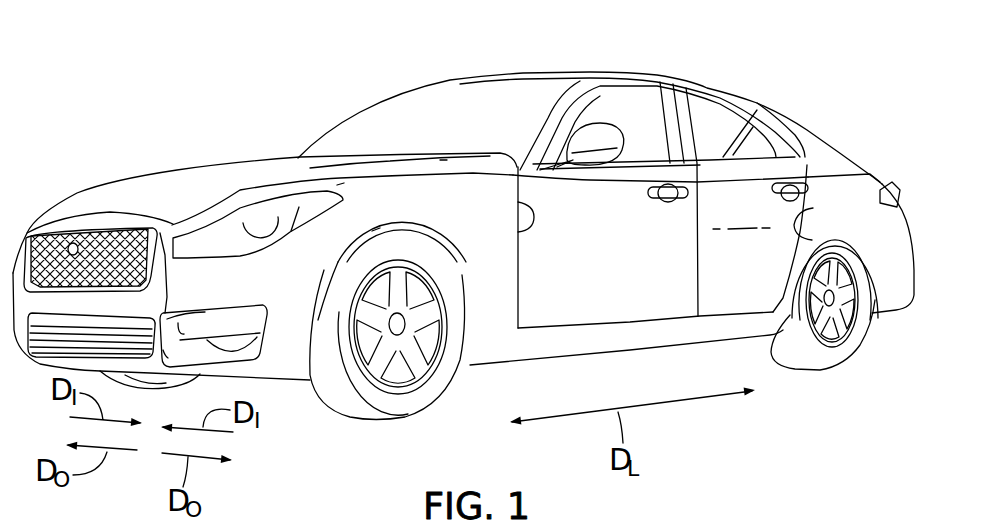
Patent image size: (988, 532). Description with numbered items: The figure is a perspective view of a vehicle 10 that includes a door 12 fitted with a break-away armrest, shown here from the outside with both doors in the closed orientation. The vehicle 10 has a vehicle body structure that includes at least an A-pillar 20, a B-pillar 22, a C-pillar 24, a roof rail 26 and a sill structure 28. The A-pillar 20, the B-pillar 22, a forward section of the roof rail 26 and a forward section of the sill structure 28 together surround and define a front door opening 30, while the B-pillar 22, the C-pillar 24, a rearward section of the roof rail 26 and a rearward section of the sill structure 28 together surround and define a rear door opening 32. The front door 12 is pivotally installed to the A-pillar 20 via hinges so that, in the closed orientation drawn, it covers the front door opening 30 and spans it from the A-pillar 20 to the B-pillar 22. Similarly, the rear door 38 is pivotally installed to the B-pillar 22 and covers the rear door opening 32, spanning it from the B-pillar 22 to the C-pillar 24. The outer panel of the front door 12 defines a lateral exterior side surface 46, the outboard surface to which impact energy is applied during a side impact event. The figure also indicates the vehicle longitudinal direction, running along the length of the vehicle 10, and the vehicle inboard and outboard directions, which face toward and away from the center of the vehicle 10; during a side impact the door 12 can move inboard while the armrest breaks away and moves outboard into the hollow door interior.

The vehicle 10 is at (812, 37).
The door 12 is at (632, 277).
The A-pillar 20 is at (557, 110).
The B-pillar 22 is at (675, 109).
The C-pillar 24 is at (787, 127).
The roof rail 26 is at (640, 84).
The sill structure 28 is at (675, 330).
The front door opening 30 is at (518, 203).
The rear door opening 32 is at (817, 207).
The rear door 38 is at (737, 283).
The lateral exterior side surface 46 is at (563, 302).